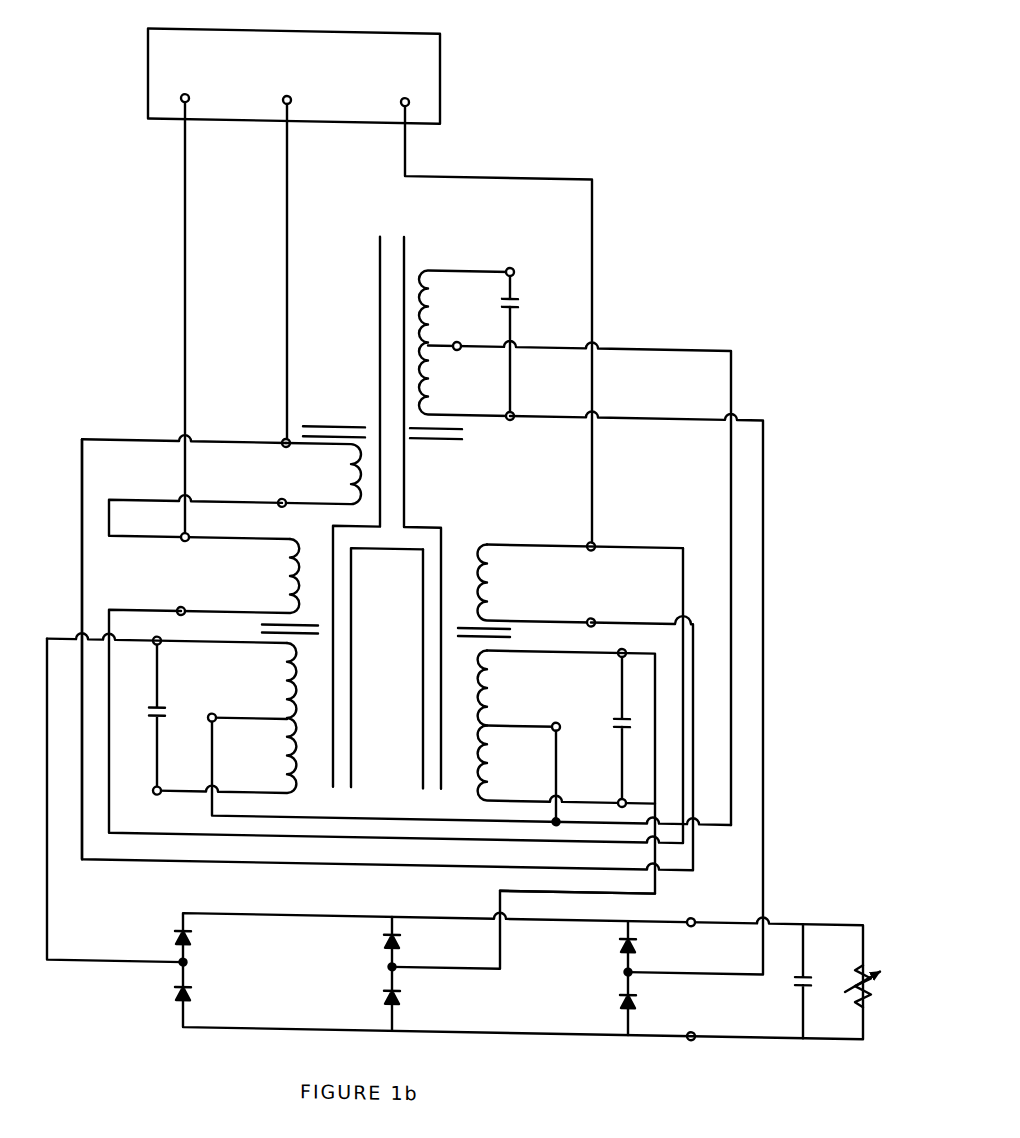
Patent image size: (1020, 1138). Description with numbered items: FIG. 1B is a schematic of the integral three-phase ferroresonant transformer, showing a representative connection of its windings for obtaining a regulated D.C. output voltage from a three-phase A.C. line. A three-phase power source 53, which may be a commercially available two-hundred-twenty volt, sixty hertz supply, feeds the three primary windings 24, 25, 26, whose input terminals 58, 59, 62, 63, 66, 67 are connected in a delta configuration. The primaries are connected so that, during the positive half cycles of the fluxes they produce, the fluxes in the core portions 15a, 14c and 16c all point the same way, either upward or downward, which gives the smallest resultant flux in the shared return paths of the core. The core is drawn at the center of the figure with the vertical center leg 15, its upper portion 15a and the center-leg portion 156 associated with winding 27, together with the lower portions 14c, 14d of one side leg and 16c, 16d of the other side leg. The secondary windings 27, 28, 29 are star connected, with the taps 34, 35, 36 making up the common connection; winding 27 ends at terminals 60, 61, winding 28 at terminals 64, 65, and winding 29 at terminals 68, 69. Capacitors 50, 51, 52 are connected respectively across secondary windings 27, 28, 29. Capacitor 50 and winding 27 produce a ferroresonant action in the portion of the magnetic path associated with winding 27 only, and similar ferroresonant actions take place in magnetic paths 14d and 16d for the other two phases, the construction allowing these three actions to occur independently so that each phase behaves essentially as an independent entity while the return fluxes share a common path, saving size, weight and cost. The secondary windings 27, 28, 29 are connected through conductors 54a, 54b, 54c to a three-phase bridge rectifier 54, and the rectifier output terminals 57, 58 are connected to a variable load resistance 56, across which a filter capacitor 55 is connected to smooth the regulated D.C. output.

The three-phase power source 53 is at (147, 87).
The core leg 156 is at (402, 381).
The vertical center leg 15 is at (382, 457).
The portion of vertical center leg 15a is at (382, 491).
The portion of vertical side leg 14c is at (335, 568).
The portion of vertical side leg 14d is at (335, 754).
The portion of vertical side leg 16c is at (439, 627).
The portion of vertical side leg 16d is at (439, 717).
The secondary winding 27 is at (416, 306).
The capacitor 50 is at (520, 301).
The terminal 60 is at (513, 266).
The tap 36 is at (459, 340).
The terminal 61 is at (513, 409).
The input terminal 58 is at (282, 446).
The primary winding 24 is at (347, 480).
The input terminal 59 is at (280, 503).
The input terminal 62 is at (193, 535).
The primary winding 25 is at (287, 578).
The input terminal 63 is at (190, 607).
The terminal 64 is at (155, 644).
The secondary winding 28 is at (293, 684).
The capacitor 51 is at (152, 711).
The tap 34 is at (212, 716).
The terminal 65 is at (167, 788).
The input terminal 66 is at (592, 547).
The primary winding 26 is at (490, 578).
The input terminal 67 is at (599, 609).
The terminal 68 is at (630, 639).
The secondary winding 29 is at (490, 686).
The tap 35 is at (562, 712).
The capacitor 52 is at (625, 708).
The terminal 69 is at (631, 791).
The conductor 54a is at (770, 508).
The conductor 54b is at (48, 919).
The conductor 54c is at (540, 890).
The three-phase bridge rectifier 54 is at (527, 1035).
The output terminal 57 is at (694, 914).
The filter capacitor 55 is at (797, 979).
The variable resistor 56 is at (862, 1001).